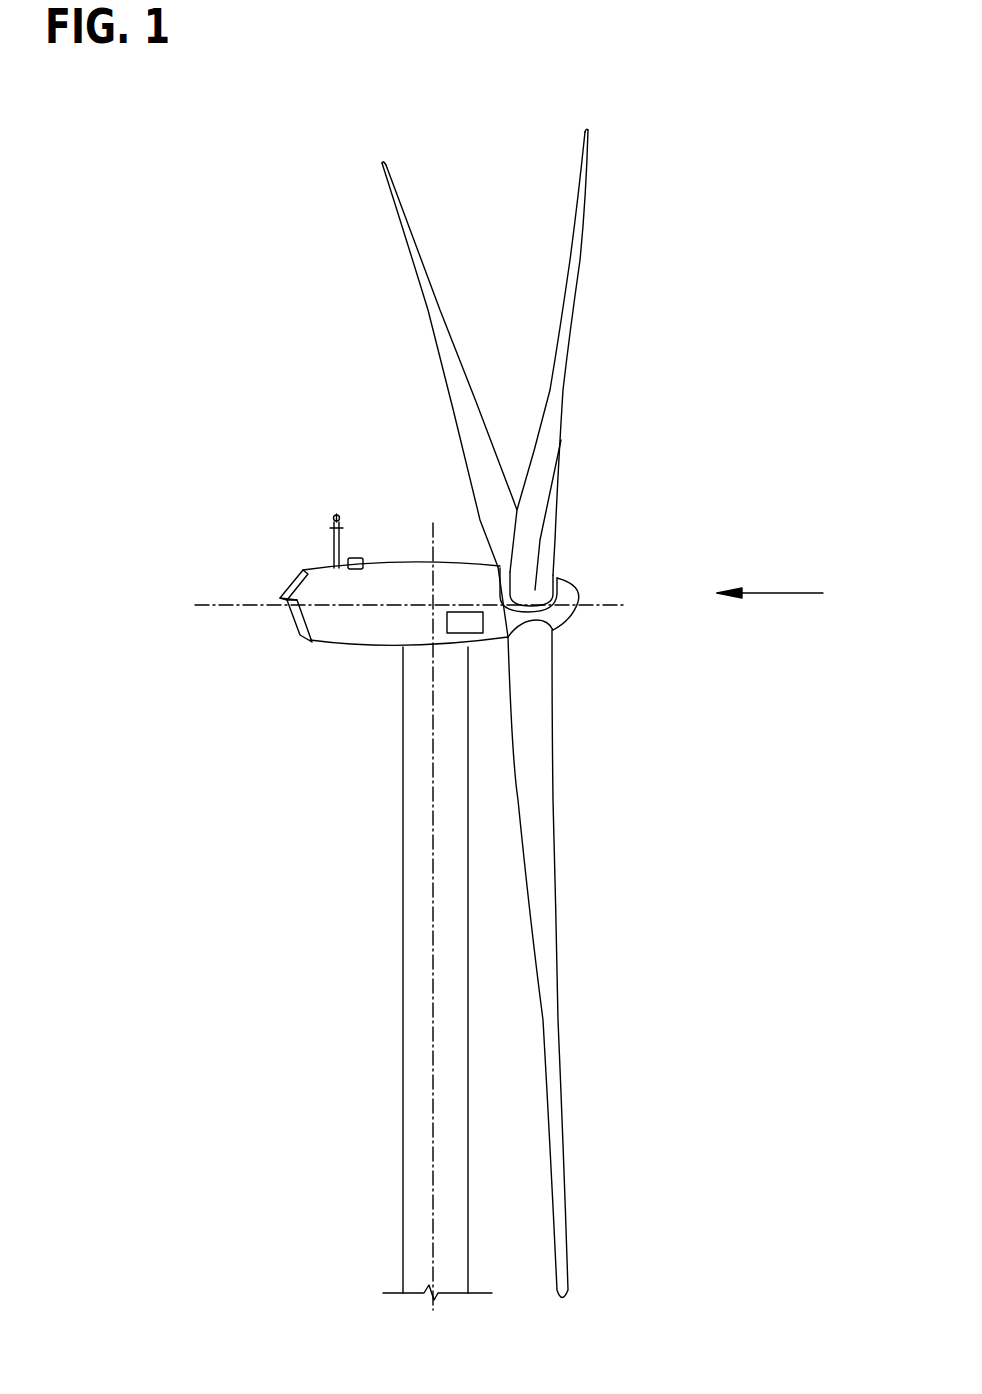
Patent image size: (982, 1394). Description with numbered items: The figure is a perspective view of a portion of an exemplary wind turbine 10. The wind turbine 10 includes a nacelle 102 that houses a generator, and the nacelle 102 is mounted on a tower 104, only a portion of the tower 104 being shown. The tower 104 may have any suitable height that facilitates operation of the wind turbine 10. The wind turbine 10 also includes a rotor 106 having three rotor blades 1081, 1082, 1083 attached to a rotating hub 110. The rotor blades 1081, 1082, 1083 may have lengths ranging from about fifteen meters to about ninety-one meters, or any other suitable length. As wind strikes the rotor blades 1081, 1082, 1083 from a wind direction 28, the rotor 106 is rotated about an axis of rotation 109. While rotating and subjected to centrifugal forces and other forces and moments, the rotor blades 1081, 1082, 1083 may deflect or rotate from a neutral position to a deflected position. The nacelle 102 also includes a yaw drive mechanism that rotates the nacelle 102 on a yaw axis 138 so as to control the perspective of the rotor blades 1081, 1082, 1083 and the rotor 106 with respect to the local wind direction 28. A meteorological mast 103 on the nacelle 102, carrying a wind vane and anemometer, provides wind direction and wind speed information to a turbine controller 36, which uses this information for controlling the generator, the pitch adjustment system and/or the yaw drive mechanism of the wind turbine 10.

The wind turbine 10 is at (270, 212).
The nacelle 102 is at (337, 642).
The wind sensor 103 is at (315, 515).
The tower 104 is at (402, 920).
The rotor 106 is at (627, 345).
The rotor blade 1081 is at (587, 210).
The rotor blade 1082 is at (418, 250).
The rotor blade 1083 is at (560, 1038).
The axis of rotation 109 is at (598, 603).
The rotating hub 110 is at (577, 616).
The yaw axis 138 is at (433, 822).
The turbine controller 36 is at (467, 622).
The wind direction 28 is at (790, 593).